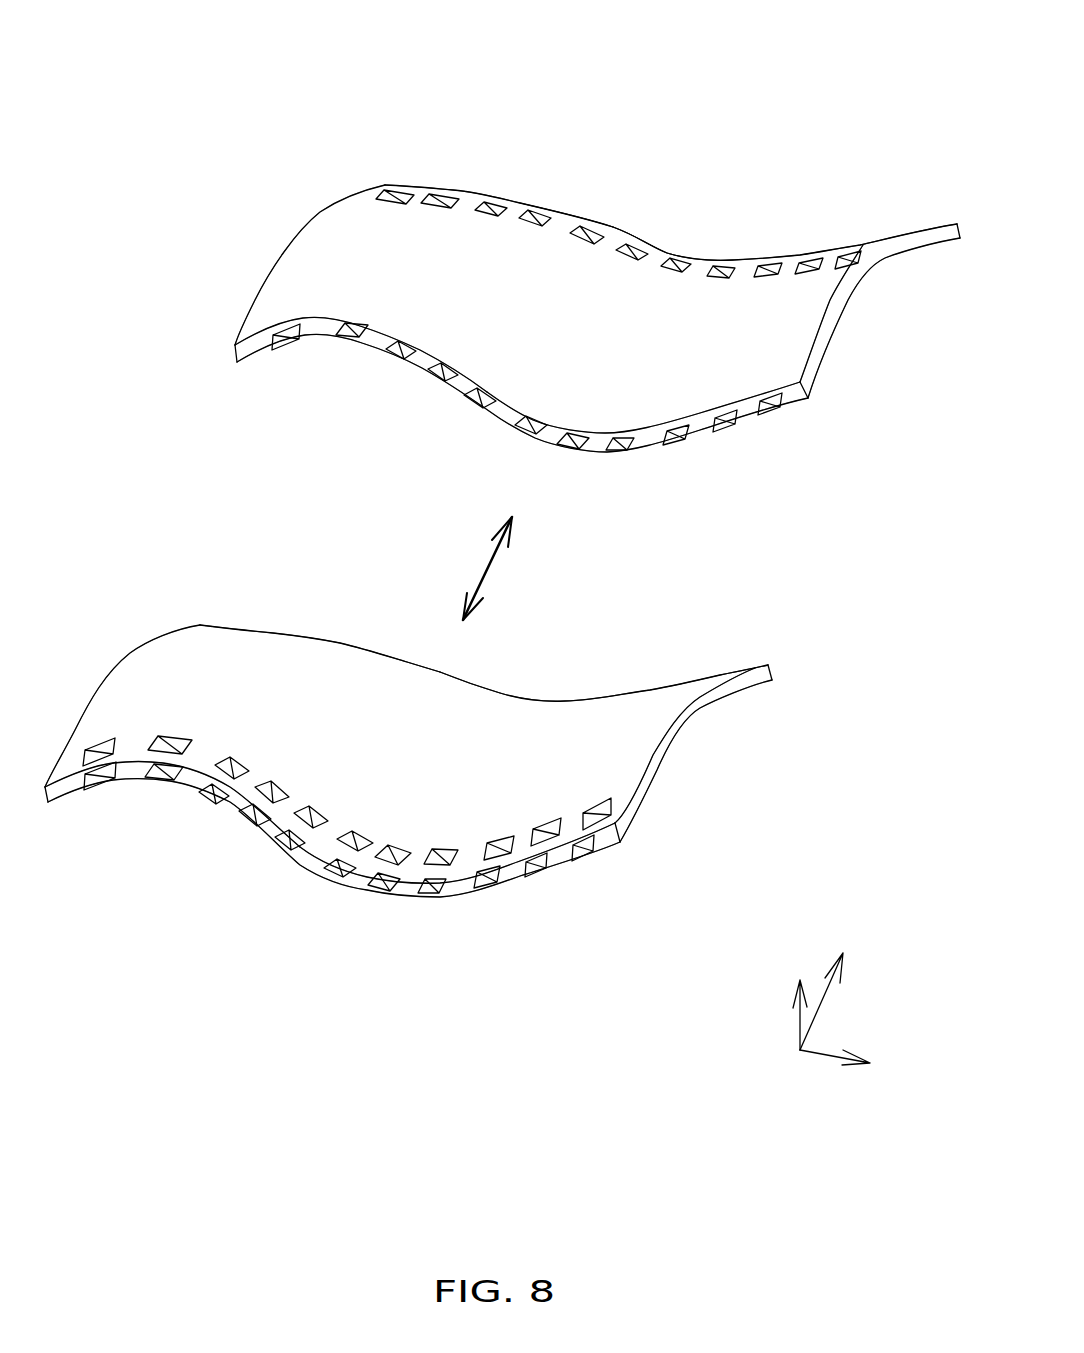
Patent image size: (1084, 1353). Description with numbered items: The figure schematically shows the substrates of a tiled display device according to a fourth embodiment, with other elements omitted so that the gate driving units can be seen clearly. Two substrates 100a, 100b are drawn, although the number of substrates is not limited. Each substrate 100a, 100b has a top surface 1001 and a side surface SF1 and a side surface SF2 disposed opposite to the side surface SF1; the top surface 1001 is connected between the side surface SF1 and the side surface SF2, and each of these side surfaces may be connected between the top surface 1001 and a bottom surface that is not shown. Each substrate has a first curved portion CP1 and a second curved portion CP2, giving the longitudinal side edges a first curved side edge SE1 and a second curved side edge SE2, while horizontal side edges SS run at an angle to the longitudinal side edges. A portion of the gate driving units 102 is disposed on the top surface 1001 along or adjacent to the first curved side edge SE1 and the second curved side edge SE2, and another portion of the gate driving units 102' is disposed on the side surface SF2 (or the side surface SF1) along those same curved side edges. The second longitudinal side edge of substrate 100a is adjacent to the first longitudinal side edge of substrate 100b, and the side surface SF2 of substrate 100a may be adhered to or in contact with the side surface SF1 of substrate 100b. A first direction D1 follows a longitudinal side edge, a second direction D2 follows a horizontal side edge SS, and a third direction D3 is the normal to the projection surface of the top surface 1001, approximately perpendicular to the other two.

The substrate 100a is at (772, 92).
The substrate 100b is at (750, 602).
The top surface 1001 is at (445, 235).
The gate driving unit 102 is at (472, 484).
The gate driving unit 102' is at (507, 608).
The first curved portion CP1 is at (365, 218).
The second curved portion CP2 is at (635, 335).
The first curved side edge SE1 is at (122, 822).
The second curved side edge SE2 is at (622, 915).
The side surface SF1 is at (837, 250).
The side surface SF2 is at (703, 432).
The horizontal side edge SS is at (258, 287).
The first direction D1 is at (855, 1051).
The second direction D2 is at (840, 1001).
The third direction D3 is at (800, 998).